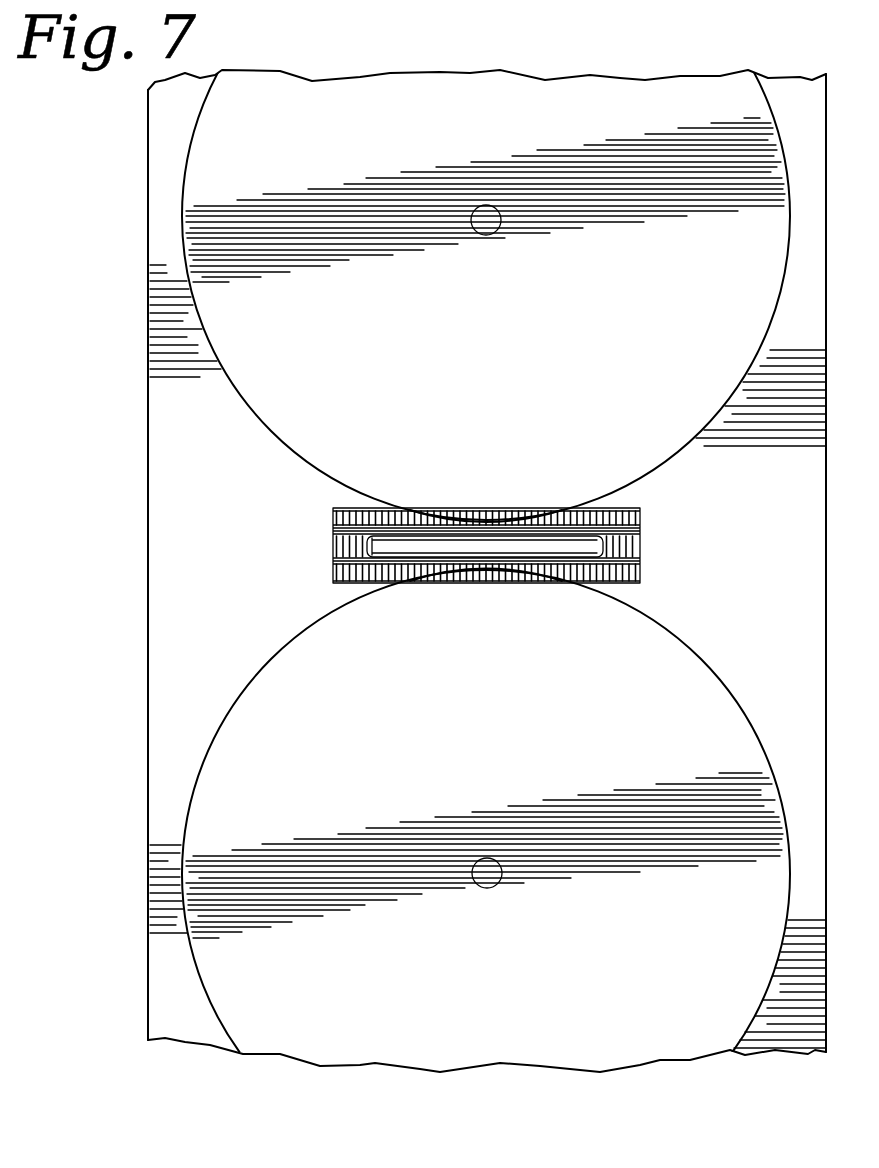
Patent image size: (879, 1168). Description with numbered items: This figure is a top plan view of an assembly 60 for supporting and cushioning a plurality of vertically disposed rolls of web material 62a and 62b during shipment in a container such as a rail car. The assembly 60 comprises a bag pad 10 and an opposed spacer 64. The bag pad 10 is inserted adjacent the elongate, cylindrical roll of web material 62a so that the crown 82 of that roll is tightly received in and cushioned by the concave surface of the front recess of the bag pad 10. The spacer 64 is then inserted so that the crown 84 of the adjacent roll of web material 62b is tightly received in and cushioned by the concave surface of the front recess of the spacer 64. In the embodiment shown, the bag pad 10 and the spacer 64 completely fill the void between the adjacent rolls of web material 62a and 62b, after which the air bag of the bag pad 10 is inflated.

The bag pad 10 is at (643, 560).
The assembly 60 is at (554, 528).
The roll of web material 62a is at (483, 726).
The roll of web material 62b is at (483, 366).
The spacer 64 is at (645, 510).
The crown 82 is at (493, 574).
The crown 84 is at (497, 521).